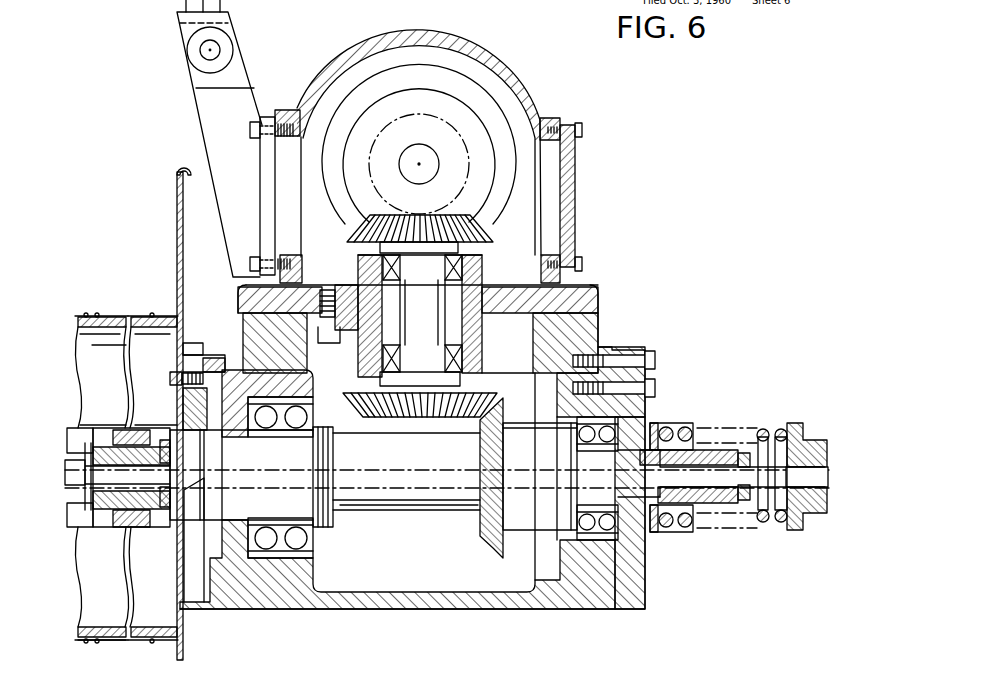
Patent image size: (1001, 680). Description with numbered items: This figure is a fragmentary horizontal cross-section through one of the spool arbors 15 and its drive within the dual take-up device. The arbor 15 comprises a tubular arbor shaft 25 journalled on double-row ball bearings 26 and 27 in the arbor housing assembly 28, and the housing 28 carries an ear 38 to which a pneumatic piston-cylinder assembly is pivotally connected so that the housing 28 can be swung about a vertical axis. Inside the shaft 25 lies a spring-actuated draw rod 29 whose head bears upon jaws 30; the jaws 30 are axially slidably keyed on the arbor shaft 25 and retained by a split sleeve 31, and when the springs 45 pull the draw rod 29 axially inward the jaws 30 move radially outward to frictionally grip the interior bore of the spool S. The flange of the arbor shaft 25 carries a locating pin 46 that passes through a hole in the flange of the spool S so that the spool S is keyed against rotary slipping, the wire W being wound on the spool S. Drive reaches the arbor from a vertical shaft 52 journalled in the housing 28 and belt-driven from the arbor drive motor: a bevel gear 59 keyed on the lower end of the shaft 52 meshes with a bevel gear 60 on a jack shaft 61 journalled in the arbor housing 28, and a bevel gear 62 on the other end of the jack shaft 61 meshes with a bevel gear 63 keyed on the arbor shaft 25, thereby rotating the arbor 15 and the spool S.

The spool arbor 15 is at (372, 513).
The tubular arbor shaft 25 is at (434, 512).
The double-row ball bearing 26 is at (317, 553).
The double-row ball bearing 27 is at (613, 533).
The arbor housing assembly 28 is at (598, 328).
The spring-actuated draw rod 29 is at (805, 475).
The jaws 30 is at (157, 433).
The split sleeve 31 is at (112, 428).
The ear 38 is at (212, 125).
The springs 45 is at (686, 427).
The locating pin 46 is at (176, 372).
The vertical shaft 52 is at (431, 136).
The bevel gear 59 is at (480, 121).
The bevel gear 60 is at (473, 218).
The jack shaft 61 is at (431, 314).
The bevel gear 62 is at (485, 392).
The bevel gear 63 is at (497, 543).
The spool S is at (185, 643).
The wheel W is at (162, 640).